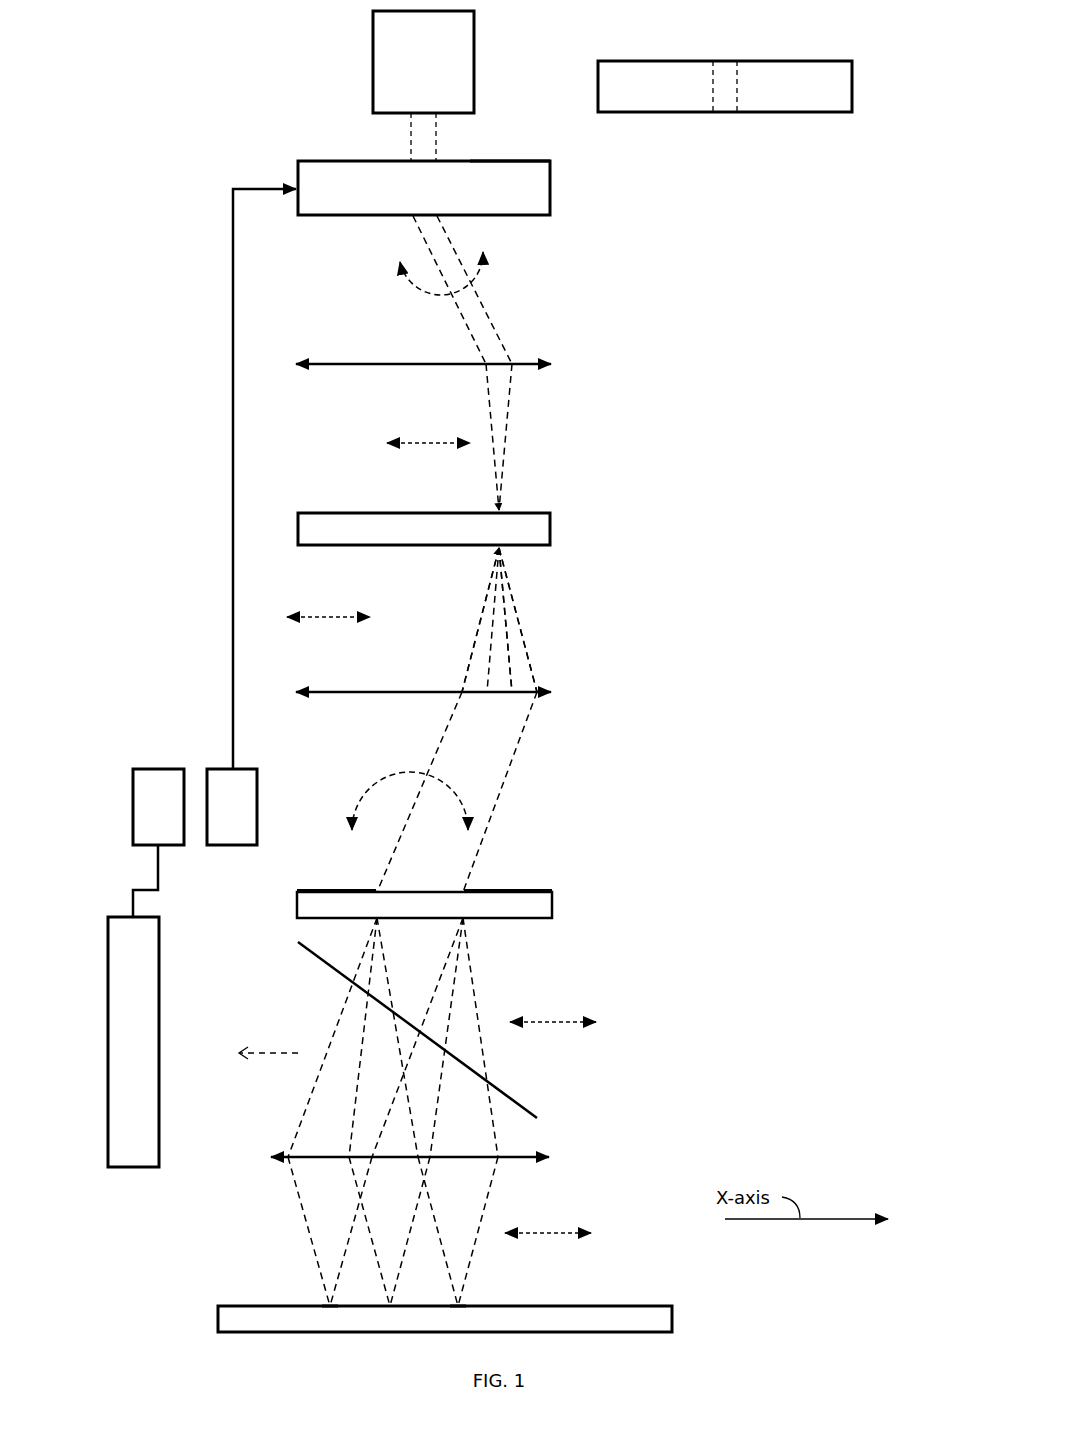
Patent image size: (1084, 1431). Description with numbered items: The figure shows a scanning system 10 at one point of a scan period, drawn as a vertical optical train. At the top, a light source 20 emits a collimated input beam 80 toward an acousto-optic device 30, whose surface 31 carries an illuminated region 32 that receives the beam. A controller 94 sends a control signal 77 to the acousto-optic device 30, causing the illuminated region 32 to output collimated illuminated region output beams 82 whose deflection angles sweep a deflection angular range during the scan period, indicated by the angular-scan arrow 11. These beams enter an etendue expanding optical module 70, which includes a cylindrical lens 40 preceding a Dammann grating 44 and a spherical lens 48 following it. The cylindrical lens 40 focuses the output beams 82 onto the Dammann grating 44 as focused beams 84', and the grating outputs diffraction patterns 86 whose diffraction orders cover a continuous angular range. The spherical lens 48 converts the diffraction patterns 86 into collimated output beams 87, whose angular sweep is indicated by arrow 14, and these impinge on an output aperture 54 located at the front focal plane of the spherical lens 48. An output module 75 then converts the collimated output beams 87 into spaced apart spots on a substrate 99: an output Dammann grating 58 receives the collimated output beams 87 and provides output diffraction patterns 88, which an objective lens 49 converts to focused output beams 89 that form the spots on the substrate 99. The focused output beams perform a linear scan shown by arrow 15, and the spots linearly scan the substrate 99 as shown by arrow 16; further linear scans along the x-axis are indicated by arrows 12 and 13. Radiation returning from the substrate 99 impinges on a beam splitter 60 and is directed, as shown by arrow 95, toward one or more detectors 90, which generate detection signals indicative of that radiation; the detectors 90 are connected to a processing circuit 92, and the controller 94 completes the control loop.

The system 10 is at (713, 1304).
The arrow representing deflection angular range 11 is at (430, 273).
The arrow representing linear scan 12 is at (410, 437).
The arrow representing linear scan 13 is at (309, 611).
The arrow representing angular scan 14 is at (410, 796).
The arrow representing linear scan 15 is at (574, 1021).
The arrow representing linear scan 16 is at (564, 1232).
The light source 20 is at (413, 75).
The acousto-optic device 30 is at (413, 199).
The surface 31 is at (493, 159).
The illuminated region 32 is at (714, 97).
The cylindrical lens 40 is at (552, 364).
The Dammann grating 44 is at (413, 540).
The spherical lens 48 is at (553, 691).
The objective lens 49 is at (551, 1155).
The output aperture 54 is at (410, 890).
The output Dammann grating 58 is at (424, 905).
The beam splitter 60 is at (318, 957).
The etendue expanding optical module 70 is at (672, 364).
The output module 75 is at (677, 1041).
The control signal 77 is at (233, 222).
The laser beam 80 is at (413, 149).
The illuminated region output beams 82 is at (469, 336).
The focused beams 84' is at (514, 437).
The diffraction patterns 86 is at (455, 613).
The collimated output beams 87 is at (457, 782).
The output diffraction patterns 88 is at (488, 968).
The focused output beams 89 is at (280, 1231).
The detectors 90 is at (122, 1053).
The processing circuit 92 is at (147, 818).
The controller 94 is at (221, 818).
The arrow indicating directed radiation 95 is at (268, 1045).
The substrate 99 is at (435, 1330).